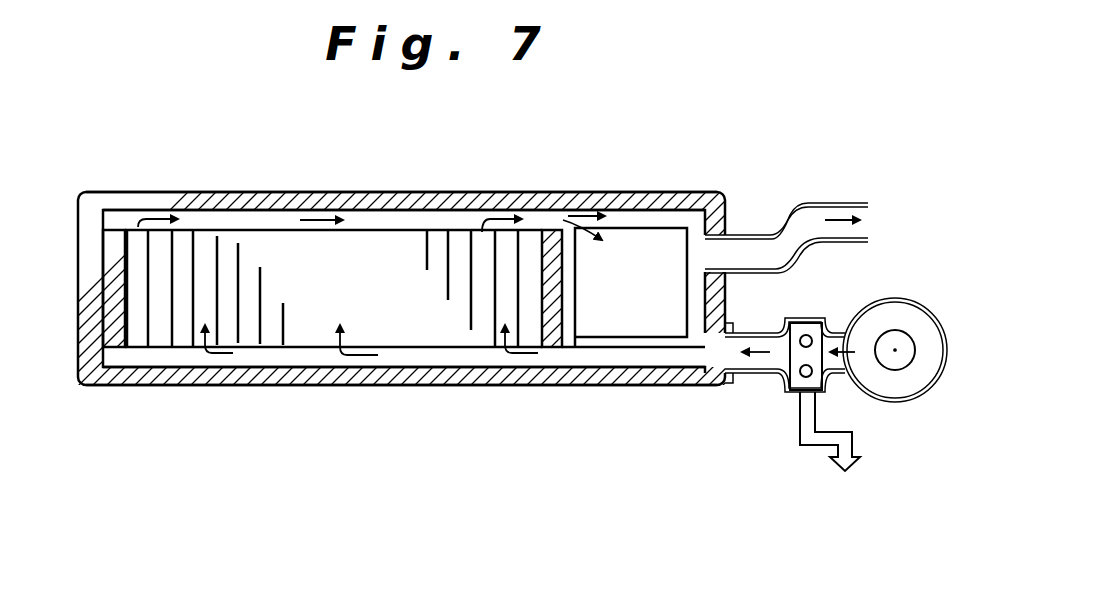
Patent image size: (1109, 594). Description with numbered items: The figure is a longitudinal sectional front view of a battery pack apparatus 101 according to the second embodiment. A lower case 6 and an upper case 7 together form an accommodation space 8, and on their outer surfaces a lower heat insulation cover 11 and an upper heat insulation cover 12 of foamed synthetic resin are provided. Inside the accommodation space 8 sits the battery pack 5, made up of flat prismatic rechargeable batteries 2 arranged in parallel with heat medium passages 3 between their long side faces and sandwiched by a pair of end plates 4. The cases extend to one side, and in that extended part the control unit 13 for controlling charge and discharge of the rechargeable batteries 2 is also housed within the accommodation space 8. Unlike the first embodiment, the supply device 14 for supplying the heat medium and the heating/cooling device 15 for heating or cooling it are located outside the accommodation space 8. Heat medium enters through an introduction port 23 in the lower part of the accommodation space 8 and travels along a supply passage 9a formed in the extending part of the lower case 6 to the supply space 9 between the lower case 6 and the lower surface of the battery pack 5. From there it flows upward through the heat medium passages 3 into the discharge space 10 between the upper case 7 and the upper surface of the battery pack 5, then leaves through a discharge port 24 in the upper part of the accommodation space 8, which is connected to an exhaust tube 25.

The battery pack apparatus 101 is at (145, 180).
The end plate 4 is at (96, 192).
The upper heat insulation cover 12 is at (237, 205).
The upper case 7 is at (294, 194).
The battery pack 5 is at (352, 250).
The rechargeable battery 2 is at (183, 345).
The heat medium passage 3 is at (220, 275).
The accommodation space 8 is at (446, 215).
The discharge space 10 is at (408, 215).
The control unit 13 is at (632, 262).
The supply space 9 is at (400, 350).
The lower heat insulation cover 11 is at (243, 385).
The lower case 6 is at (290, 380).
The supply passage 9a is at (628, 370).
The discharge port 24 is at (700, 240).
The exhaust tube 25 is at (778, 225).
The introduction port 23 is at (708, 382).
The heating/cooling device 15 is at (790, 400).
The supply device 14 is at (900, 405).